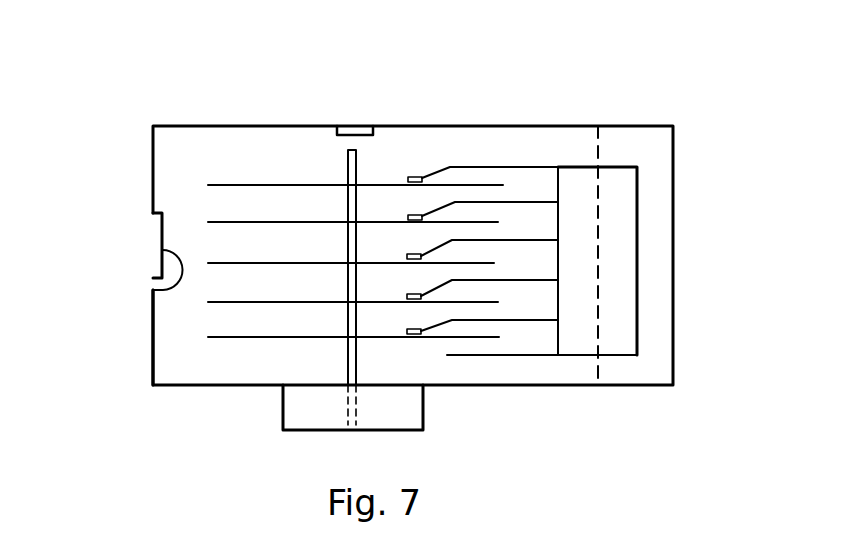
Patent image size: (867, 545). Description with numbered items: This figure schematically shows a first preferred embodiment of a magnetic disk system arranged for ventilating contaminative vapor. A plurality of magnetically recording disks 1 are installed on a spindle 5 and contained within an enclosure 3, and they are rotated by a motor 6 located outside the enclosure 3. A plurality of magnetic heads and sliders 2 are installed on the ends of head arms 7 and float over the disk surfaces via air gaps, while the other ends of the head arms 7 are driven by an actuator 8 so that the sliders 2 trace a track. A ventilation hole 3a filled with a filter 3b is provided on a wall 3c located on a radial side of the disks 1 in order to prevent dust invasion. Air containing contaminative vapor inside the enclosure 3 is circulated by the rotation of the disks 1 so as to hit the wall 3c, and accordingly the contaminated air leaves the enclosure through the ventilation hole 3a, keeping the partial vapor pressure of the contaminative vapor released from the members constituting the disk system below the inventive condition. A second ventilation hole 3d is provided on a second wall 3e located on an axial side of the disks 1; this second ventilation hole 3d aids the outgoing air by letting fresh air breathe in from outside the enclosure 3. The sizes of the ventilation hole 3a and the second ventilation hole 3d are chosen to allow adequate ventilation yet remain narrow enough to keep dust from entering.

The magnetic recording disks 1 is at (253, 222).
The sliders 2 is at (407, 217).
The enclosure 3 is at (675, 273).
The ventilation hole 3a is at (160, 237).
The filter 3b is at (160, 289).
The wall 3c is at (153, 335).
The second ventilation hole 3d is at (355, 128).
The second wall 3e is at (578, 124).
The spindle 5 is at (348, 353).
The motor 6 is at (413, 413).
The head arms 7 is at (438, 170).
The actuator 8 is at (623, 200).